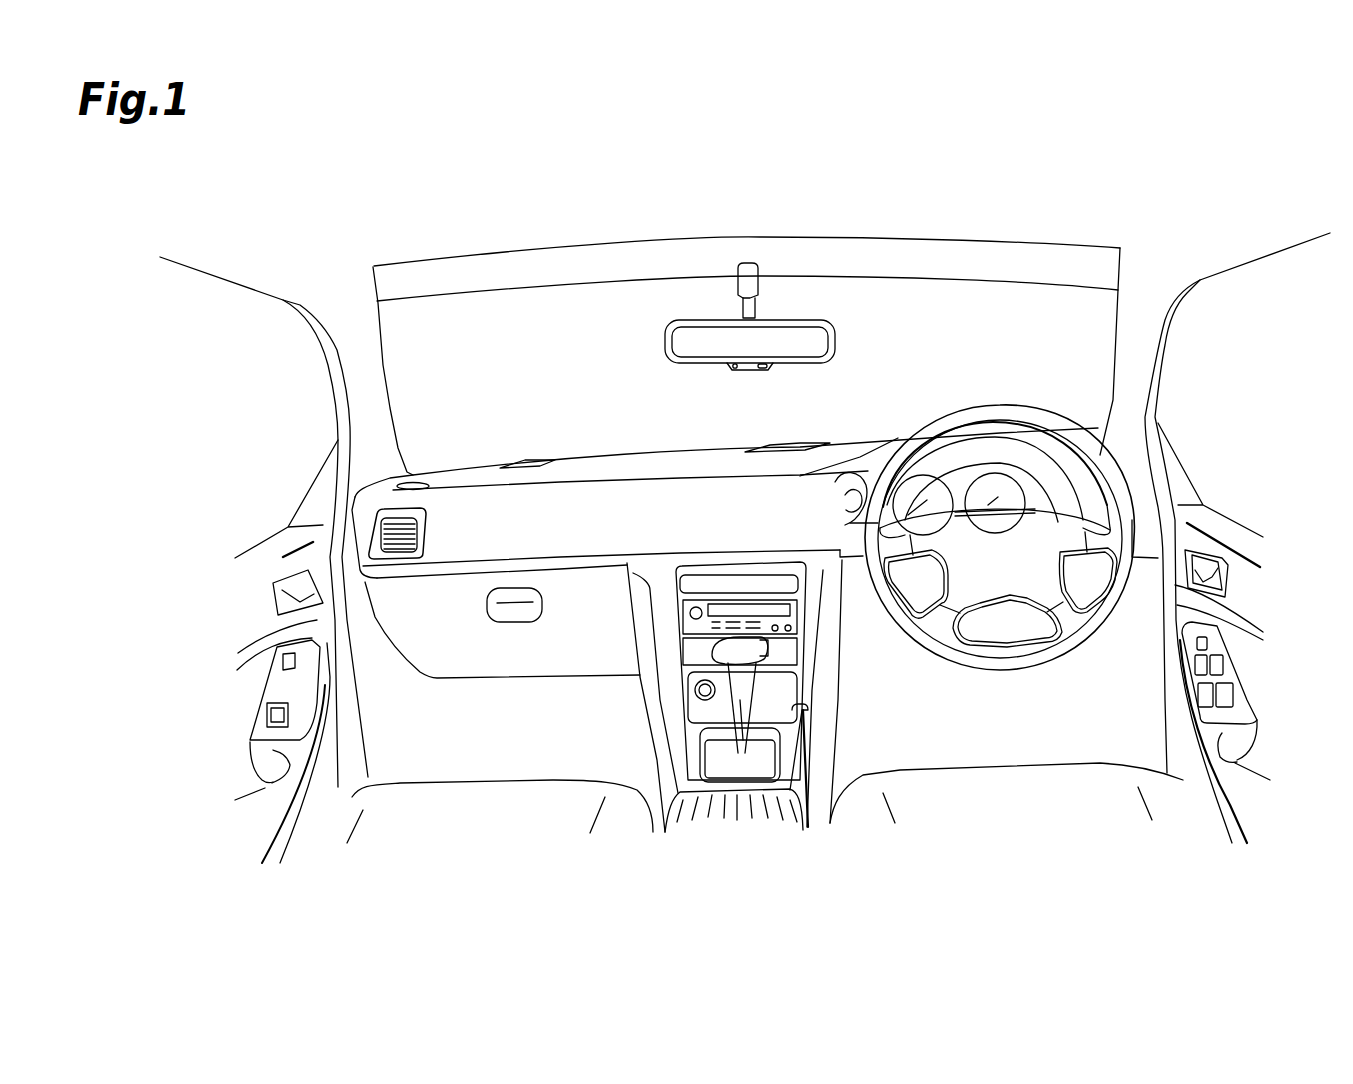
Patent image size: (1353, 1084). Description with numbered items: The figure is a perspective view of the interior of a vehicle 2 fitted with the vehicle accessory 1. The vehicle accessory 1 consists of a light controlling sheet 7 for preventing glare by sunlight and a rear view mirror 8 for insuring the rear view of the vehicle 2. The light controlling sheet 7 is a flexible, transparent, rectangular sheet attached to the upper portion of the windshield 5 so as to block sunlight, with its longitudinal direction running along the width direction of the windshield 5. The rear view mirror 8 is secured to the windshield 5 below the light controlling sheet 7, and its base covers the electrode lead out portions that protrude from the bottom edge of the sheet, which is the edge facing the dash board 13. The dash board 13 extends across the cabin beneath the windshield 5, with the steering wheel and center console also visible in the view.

The vehicle accessory 1 is at (823, 196).
The vehicle 2 is at (416, 196).
The windshield 5 is at (398, 358).
The light controlling sheet 7 is at (677, 257).
The rear view mirror 8 is at (805, 340).
The dash board 13 is at (648, 472).